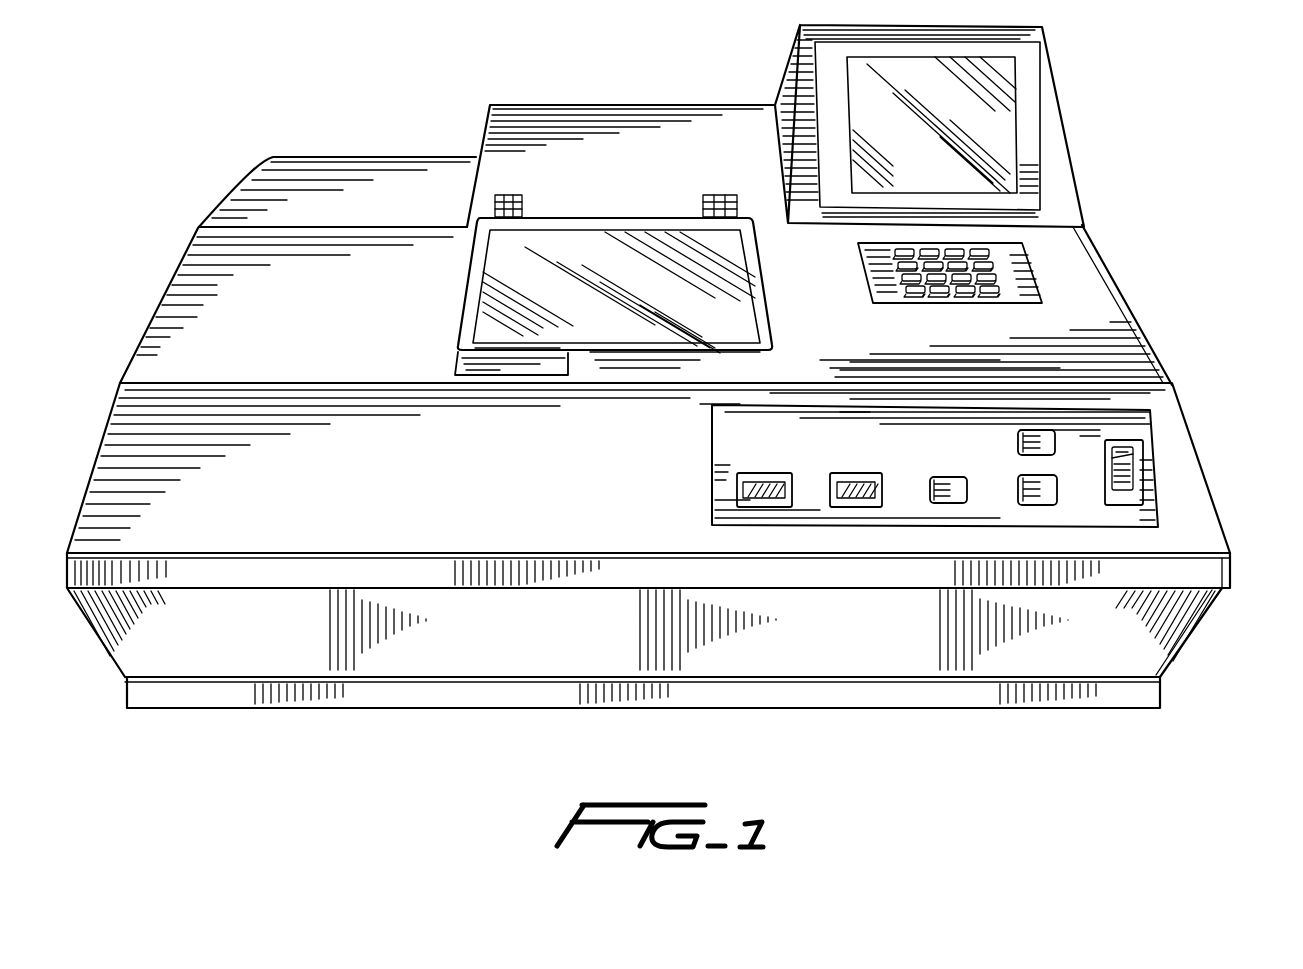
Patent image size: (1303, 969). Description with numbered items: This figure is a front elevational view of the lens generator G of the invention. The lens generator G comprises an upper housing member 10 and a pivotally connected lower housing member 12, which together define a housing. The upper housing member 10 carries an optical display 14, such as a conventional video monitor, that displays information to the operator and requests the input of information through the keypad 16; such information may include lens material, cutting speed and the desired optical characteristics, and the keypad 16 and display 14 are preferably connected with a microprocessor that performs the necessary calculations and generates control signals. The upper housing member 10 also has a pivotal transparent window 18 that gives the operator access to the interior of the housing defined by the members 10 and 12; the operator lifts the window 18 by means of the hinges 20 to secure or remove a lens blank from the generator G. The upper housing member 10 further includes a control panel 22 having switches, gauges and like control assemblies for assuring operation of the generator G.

The lens generator G is at (1165, 155).
The upper housing member 10 is at (1186, 482).
The lower housing member 12 is at (1185, 653).
The optical display 14 is at (1008, 153).
The keypad 16 is at (1013, 265).
The pivotal transparent window 18 is at (498, 276).
The hinges 20 is at (703, 193).
The control panel 22 is at (823, 444).